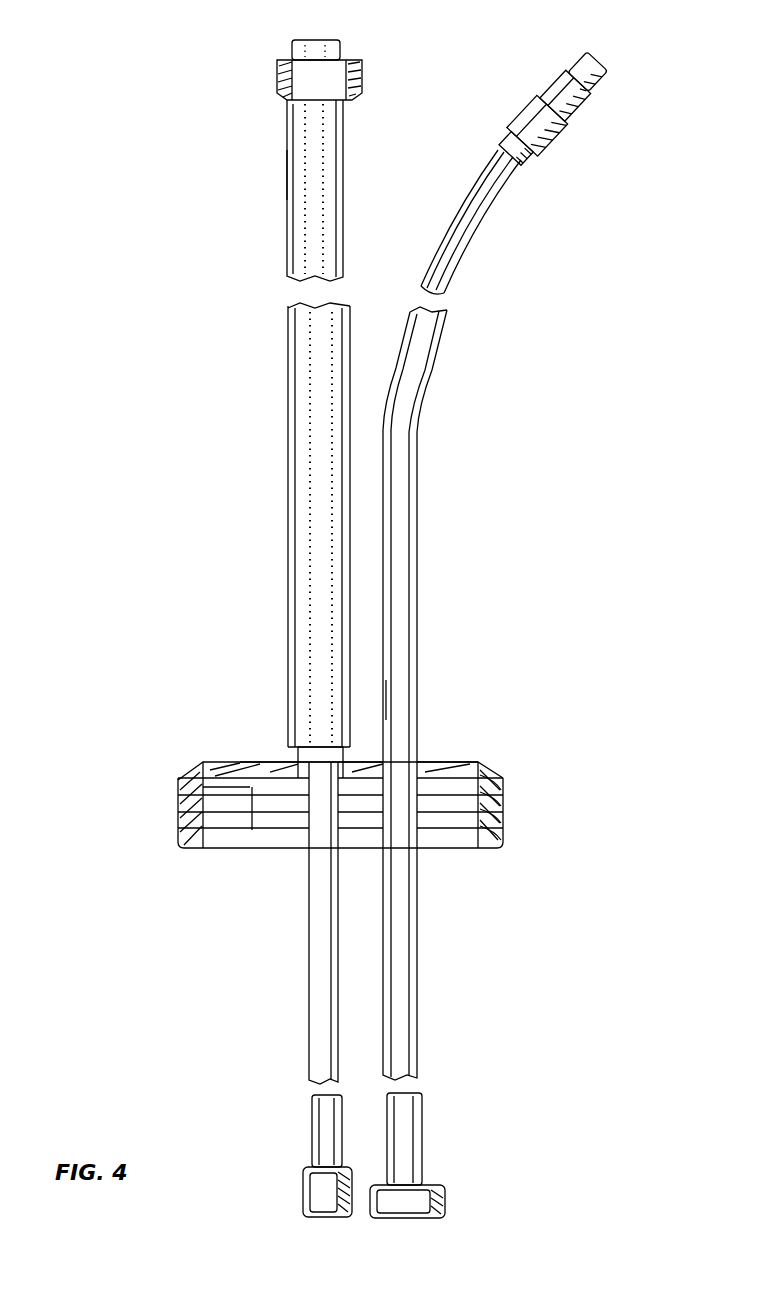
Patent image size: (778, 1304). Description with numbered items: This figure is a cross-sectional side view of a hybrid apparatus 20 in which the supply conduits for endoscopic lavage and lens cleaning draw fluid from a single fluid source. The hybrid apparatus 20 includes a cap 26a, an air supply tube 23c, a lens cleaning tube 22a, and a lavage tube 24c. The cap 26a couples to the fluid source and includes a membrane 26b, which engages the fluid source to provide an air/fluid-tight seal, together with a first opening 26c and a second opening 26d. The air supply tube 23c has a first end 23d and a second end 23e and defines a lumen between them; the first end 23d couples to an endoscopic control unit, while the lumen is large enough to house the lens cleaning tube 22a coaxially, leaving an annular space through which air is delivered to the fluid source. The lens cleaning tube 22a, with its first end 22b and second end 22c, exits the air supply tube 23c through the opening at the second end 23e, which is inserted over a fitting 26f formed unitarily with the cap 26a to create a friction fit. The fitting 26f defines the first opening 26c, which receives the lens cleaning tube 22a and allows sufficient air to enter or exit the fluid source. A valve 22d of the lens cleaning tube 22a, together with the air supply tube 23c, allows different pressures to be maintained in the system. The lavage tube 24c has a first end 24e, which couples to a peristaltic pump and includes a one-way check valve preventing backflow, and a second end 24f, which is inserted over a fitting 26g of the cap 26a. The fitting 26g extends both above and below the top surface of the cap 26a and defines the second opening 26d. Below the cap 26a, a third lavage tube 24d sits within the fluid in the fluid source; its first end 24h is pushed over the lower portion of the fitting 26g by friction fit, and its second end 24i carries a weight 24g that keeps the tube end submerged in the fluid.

The hybrid apparatus 20 is at (162, 36).
The lens cleaning tube 22a is at (310, 974).
The first end of the lens cleaning tube 22b is at (291, 48).
The second end of the lens cleaning tube 22c is at (312, 1135).
The valve 22d is at (303, 1195).
The air supply tube 23c is at (289, 342).
The first end of the air supply tube 23d is at (290, 124).
The second end of the air supply tube 23e is at (289, 700).
The lavage tube 24c is at (414, 430).
The third lavage tube 24d is at (420, 958).
The first end of the lavage tube 24e is at (536, 152).
The second end of the lavage tube 24f is at (418, 694).
The weight 24g is at (446, 1205).
The first end of the third lavage tube 24h is at (420, 830).
The second end of the third lavage tube 24i is at (424, 1145).
The cap 26a is at (180, 802).
The membrane 26b is at (503, 817).
The first opening 26c is at (291, 751).
The second opening 26d is at (419, 738).
The fitting 26f is at (293, 757).
The fitting 26g is at (420, 758).